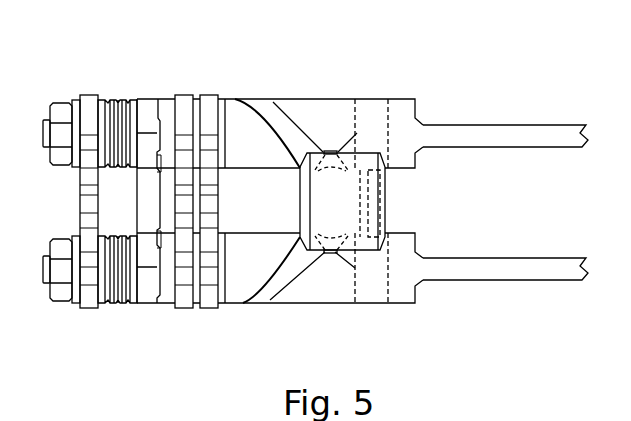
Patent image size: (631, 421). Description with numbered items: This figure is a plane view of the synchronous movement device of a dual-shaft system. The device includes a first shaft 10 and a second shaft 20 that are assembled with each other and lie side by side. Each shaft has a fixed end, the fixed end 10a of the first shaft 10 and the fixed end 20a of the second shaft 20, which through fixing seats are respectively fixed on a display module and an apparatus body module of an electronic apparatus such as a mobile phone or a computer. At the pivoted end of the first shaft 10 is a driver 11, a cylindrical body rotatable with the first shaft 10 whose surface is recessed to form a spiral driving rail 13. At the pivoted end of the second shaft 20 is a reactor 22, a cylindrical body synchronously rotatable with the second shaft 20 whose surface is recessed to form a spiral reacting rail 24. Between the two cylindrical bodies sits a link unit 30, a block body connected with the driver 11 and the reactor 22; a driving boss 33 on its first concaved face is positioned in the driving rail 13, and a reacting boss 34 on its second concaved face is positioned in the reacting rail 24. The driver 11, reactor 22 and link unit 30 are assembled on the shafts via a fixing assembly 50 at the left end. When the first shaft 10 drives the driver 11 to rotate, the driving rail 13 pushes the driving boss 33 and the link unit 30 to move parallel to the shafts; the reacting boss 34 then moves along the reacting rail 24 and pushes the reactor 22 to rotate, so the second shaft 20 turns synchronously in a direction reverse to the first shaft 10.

The first shaft 10 is at (465, 87).
The fixed end 10a is at (510, 134).
The driver 11 is at (343, 107).
The driving rail 13 is at (292, 100).
The second shaft 20 is at (464, 320).
The fixed end 20a is at (525, 273).
The reactor 22 is at (342, 303).
The reacting rail 24 is at (290, 305).
The link unit 30 is at (360, 203).
The driving boss 33 is at (332, 150).
The reacting boss 34 is at (331, 254).
The fixing assembly 50 is at (100, 63).